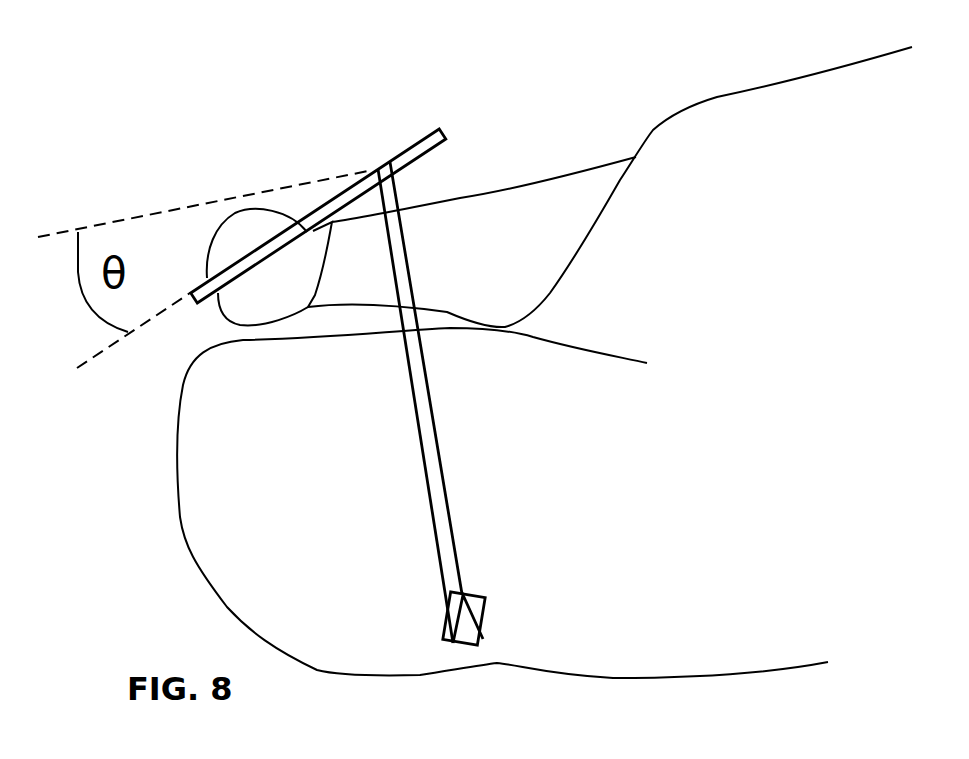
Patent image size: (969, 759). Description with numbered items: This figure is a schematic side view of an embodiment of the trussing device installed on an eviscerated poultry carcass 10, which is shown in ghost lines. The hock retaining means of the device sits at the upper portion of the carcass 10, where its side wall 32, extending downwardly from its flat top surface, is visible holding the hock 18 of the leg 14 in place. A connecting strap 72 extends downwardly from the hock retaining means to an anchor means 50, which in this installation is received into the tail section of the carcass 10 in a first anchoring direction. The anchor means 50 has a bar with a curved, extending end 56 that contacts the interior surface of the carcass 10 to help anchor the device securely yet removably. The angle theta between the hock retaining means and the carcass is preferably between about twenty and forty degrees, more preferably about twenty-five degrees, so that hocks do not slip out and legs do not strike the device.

The poultry carcass 10 is at (619, 487).
The leg 14 is at (480, 233).
The hock 18 is at (233, 227).
The side wall 32 is at (307, 227).
The anchor means 50 is at (466, 645).
The extending end 56 is at (470, 627).
The strap 72 is at (430, 457).